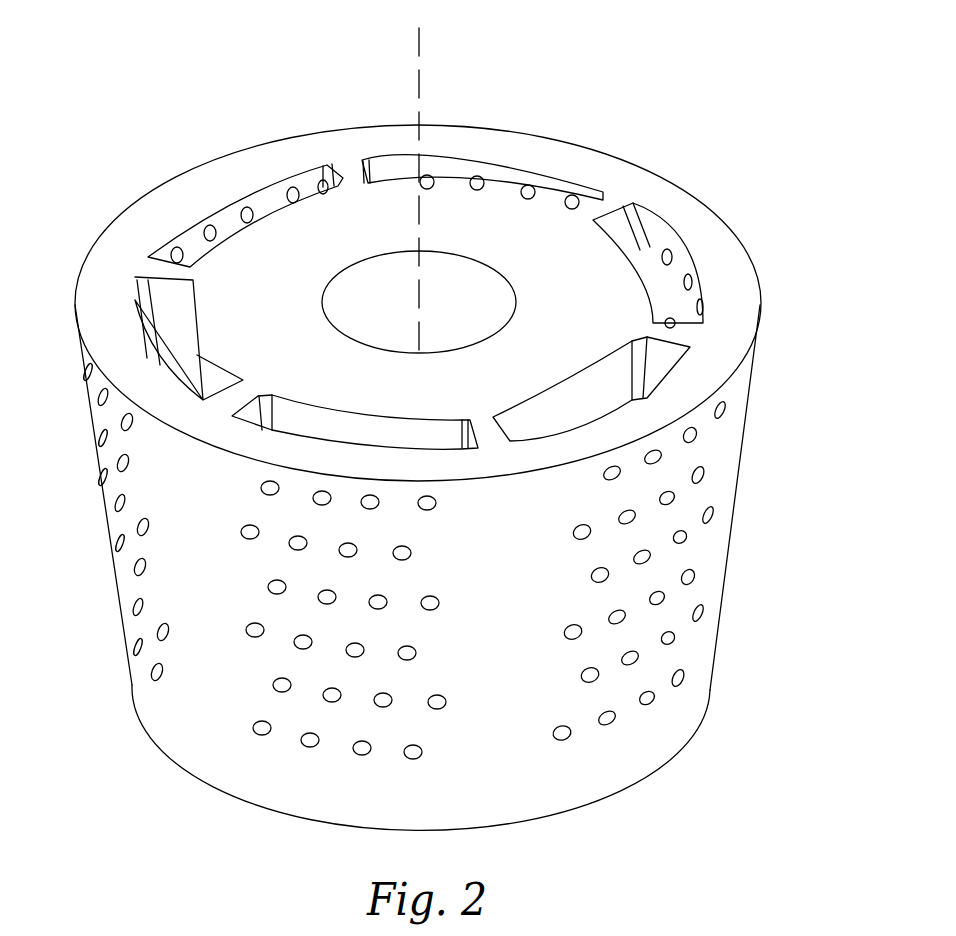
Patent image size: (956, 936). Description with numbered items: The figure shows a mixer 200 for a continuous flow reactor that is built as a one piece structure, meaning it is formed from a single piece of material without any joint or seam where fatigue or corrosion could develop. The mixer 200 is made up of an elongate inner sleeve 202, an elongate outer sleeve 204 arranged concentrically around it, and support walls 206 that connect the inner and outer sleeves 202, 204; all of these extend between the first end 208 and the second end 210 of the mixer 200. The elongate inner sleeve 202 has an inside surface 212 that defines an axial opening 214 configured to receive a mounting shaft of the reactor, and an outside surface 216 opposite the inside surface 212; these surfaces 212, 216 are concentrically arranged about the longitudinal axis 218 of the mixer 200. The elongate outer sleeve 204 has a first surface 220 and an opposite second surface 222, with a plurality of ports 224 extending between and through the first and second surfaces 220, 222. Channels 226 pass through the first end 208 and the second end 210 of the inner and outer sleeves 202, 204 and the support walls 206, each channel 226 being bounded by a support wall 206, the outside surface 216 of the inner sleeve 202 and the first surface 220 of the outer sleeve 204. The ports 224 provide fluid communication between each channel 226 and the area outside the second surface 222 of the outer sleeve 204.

The mixer 200 is at (120, 66).
The elongate inner sleeve 202 is at (575, 284).
The elongate outer sleeve 204 is at (761, 306).
The support wall 206 is at (313, 183).
The first end 208 is at (775, 244).
The second end 210 is at (737, 706).
The inside surface 212 is at (365, 318).
The axial opening 214 is at (389, 288).
The outside surface 216 is at (340, 427).
The longitudinal axis 218 is at (400, 52).
The first surface 220 is at (220, 212).
The second surface 222 is at (106, 455).
The ports 224 is at (220, 236).
The channel 226 is at (188, 362).